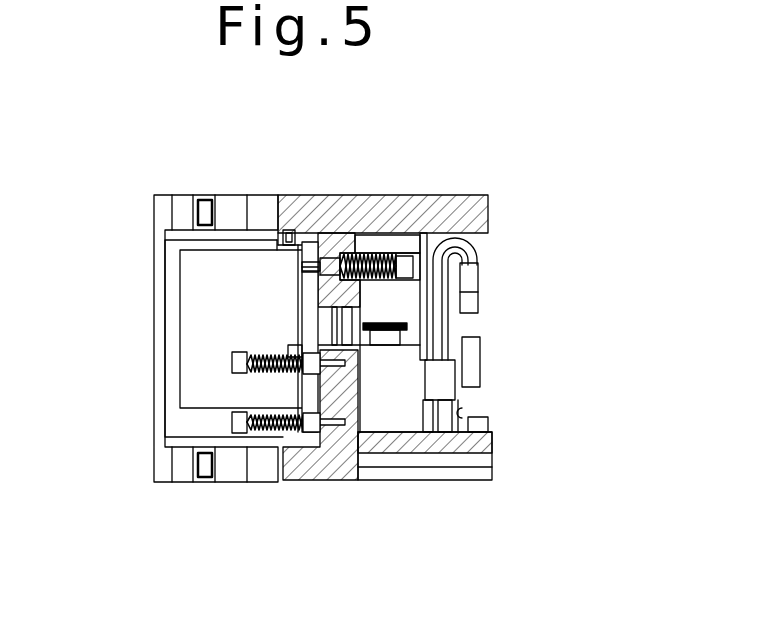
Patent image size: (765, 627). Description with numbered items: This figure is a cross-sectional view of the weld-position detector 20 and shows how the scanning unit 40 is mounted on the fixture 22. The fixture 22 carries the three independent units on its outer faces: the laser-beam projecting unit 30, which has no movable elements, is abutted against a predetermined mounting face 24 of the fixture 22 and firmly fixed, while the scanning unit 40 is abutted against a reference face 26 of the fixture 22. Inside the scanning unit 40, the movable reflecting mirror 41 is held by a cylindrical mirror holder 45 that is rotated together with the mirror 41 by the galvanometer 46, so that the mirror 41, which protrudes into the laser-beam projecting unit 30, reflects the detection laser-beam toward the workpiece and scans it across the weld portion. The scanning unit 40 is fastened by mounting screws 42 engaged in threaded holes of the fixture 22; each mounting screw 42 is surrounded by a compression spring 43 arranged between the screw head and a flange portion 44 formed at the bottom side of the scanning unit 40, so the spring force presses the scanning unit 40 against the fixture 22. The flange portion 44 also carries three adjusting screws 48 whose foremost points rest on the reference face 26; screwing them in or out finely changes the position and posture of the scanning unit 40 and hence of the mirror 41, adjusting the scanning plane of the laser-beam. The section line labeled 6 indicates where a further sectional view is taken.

The section line 6- 6 is at (384, 182).
The weld-position detector 20 is at (408, 267).
The fixture 22 is at (490, 195).
The mounting face 24 is at (362, 248).
The reference face 26 is at (318, 440).
The laser-beam projecting unit 30 is at (403, 413).
The scanning unit 40 is at (200, 323).
The movable reflecting mirror 41 is at (403, 323).
The mounting screw 42 is at (235, 360).
The compression spring 43 is at (250, 374).
The flange portion 44 is at (313, 392).
The cylindrical mirror holder 45 is at (427, 362).
The galvanometer 46 is at (190, 275).
The adjusting screw 48 is at (296, 347).